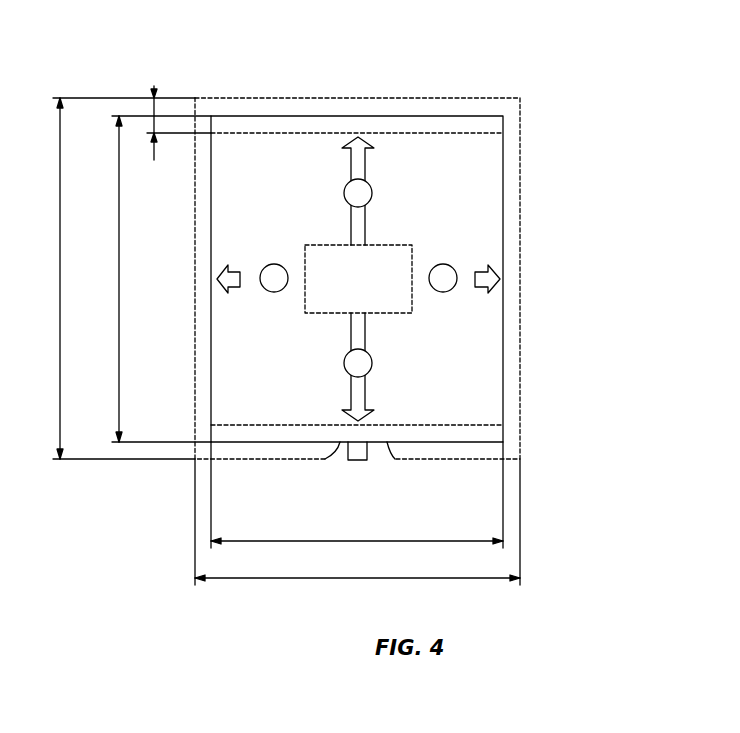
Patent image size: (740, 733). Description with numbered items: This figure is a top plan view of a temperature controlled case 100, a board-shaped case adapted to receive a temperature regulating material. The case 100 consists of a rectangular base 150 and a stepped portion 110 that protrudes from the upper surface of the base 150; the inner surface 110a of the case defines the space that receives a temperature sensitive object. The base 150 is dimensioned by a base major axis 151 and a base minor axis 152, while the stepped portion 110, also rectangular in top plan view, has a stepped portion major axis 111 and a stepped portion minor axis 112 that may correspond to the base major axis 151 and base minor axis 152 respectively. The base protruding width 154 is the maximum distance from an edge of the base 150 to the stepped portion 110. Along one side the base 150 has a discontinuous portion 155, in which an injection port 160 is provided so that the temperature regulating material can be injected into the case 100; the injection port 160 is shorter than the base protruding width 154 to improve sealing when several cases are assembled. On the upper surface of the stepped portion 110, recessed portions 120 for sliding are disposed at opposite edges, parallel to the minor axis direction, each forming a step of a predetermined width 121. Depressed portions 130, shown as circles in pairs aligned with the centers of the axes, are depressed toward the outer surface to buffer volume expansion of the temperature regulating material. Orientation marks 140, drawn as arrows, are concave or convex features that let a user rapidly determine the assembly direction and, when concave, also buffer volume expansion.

The temperature controlled case 100 is at (378, 27).
The stepped portion 110 is at (510, 150).
The inner surface 110a is at (473, 393).
The stepped portion major axis 111 is at (144, 279).
The stepped portion minor axis 112 is at (357, 495).
The recessed portion 120 is at (437, 108).
The width 121 is at (152, 127).
The depressed portion 130 is at (356, 192).
The orientation mark 140 is at (352, 391).
The base 150 is at (500, 92).
The base major axis 151 is at (106, 278).
The base minor axis 152 is at (357, 522).
The base protruding width 154 is at (155, 107).
The discontinuous portion 155 is at (333, 447).
The injection port 160 is at (360, 452).